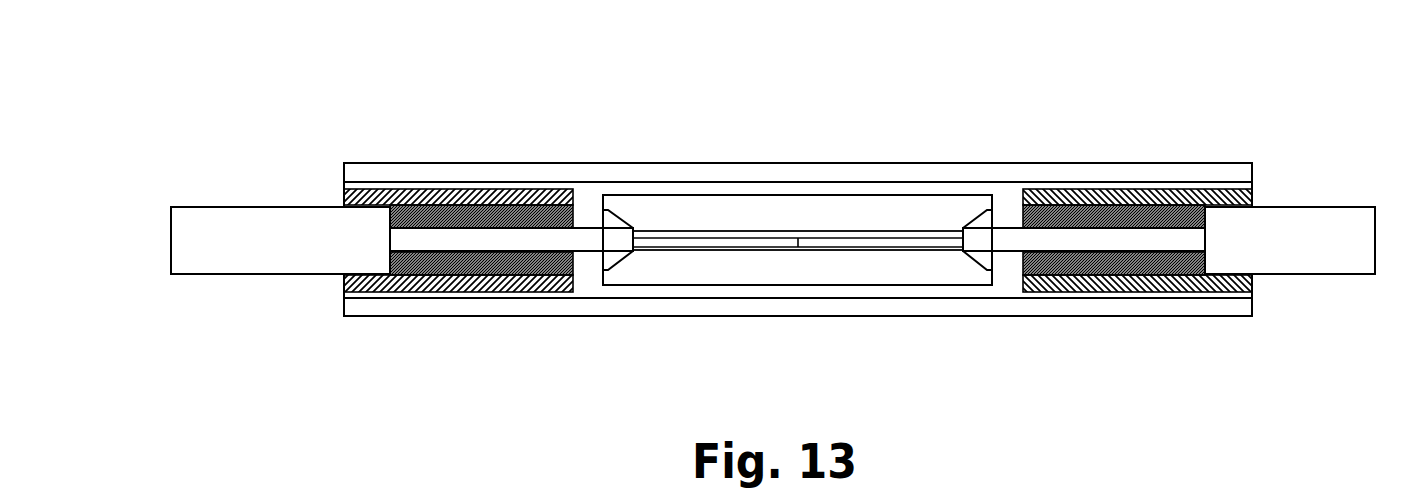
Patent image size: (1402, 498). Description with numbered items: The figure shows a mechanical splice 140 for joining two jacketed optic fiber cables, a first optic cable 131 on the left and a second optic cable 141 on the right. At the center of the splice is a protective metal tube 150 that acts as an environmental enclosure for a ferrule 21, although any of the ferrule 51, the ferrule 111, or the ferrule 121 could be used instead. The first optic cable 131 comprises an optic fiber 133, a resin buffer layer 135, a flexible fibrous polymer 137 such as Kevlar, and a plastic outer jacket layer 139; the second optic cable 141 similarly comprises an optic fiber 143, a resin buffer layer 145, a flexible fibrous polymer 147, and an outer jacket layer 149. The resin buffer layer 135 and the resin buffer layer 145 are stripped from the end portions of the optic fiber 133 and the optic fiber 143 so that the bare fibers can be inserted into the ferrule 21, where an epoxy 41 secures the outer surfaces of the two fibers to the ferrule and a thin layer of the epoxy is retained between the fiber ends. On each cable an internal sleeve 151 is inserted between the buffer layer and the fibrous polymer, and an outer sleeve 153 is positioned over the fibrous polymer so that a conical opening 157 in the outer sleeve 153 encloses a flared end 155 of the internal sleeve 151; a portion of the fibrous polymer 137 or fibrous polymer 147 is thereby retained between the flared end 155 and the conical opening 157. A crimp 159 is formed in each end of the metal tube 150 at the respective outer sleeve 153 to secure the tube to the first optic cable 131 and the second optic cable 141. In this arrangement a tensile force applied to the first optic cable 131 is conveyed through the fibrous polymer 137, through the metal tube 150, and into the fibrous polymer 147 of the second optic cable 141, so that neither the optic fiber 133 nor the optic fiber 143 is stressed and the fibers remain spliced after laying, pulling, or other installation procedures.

The ferrule 21 is at (777, 268).
The epoxy 41 is at (718, 229).
The ferrule 51 is at (888, 371).
The ferrule 111 is at (923, 371).
The ferrule 121 is at (965, 371).
The first optic cable 131 is at (268, 275).
The optic fiber 133 is at (760, 245).
The resin buffer layer 135 is at (588, 252).
The flexible fibrous polymer 137 is at (435, 292).
The outer jacket layer 139 is at (256, 214).
The mechanical splice 140 is at (600, 397).
The second optic cable 141 is at (1318, 275).
The optic fiber 143 is at (828, 238).
The resin buffer layer 145 is at (997, 237).
The flexible fibrous polymer 147 is at (1168, 212).
The outer jacket layer 149 is at (1287, 238).
The metal tube 150 is at (685, 172).
The internal sleeve 151 is at (550, 193).
The outer sleeve 153 is at (400, 190).
The flared end 155 is at (990, 272).
The conical opening 157 is at (568, 189).
The crimp 159 is at (465, 150).